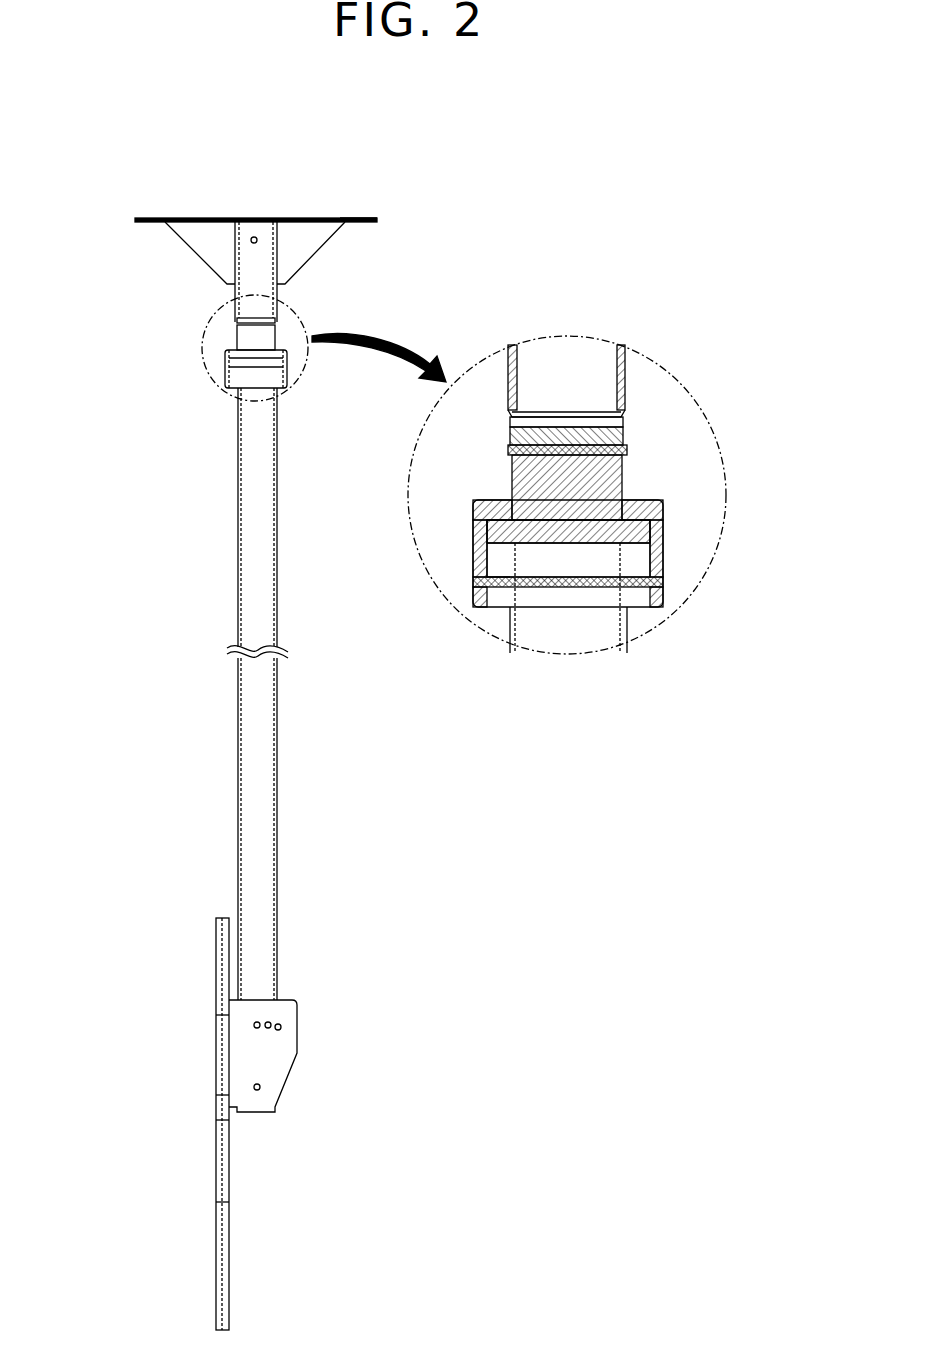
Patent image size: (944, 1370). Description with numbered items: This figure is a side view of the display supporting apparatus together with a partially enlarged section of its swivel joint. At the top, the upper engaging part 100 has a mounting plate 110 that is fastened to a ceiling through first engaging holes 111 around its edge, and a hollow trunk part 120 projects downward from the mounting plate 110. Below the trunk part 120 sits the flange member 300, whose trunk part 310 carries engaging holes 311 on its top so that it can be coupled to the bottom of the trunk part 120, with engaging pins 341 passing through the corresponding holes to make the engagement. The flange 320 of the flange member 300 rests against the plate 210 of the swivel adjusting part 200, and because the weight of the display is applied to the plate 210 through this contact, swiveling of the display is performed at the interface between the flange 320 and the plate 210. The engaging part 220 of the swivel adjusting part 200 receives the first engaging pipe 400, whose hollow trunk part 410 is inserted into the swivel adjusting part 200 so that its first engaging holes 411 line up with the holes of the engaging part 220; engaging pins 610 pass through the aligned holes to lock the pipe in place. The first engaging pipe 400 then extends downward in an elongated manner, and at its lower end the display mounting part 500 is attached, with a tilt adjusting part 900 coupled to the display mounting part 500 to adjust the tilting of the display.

The upper engaging part 100 is at (176, 250).
The mounting plate 110 is at (215, 215).
The first engaging holes 111 is at (356, 215).
The trunk part 120 is at (582, 380).
The swivel adjusting part 200 is at (223, 387).
The plate 210 is at (505, 516).
The engaging part 220 is at (500, 545).
The flange member 300 is at (230, 360).
The trunk part 310 is at (626, 421).
The engaging holes 311 is at (510, 450).
The flange 320 is at (657, 522).
The engaging pins 341 is at (512, 419).
The first engaging pipe 400 is at (237, 520).
The trunk part 410 is at (540, 625).
The first engaging holes 411 is at (503, 586).
The display mounting part 500 is at (215, 967).
The engaging pins 610 is at (657, 578).
The tilt adjusting part 900 is at (294, 1081).